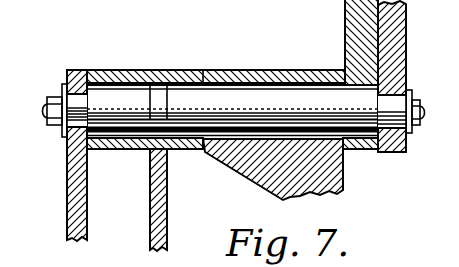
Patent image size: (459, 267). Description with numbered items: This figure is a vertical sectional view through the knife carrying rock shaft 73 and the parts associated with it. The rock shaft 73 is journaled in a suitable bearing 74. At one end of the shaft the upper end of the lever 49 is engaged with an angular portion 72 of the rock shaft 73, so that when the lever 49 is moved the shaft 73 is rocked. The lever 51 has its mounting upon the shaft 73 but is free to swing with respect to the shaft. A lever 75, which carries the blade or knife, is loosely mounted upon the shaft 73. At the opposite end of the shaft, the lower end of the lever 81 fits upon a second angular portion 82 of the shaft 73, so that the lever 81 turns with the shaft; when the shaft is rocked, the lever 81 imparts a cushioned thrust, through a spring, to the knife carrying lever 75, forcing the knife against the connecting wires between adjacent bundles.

The lever 49 is at (70, 215).
The lever 51 is at (160, 198).
The angular portion 72 is at (77, 117).
The rock shaft 73 is at (232, 115).
The bearing 74 is at (278, 76).
The lever 75 is at (356, 34).
The lever 81 is at (395, 41).
The angular portion 82 is at (392, 121).